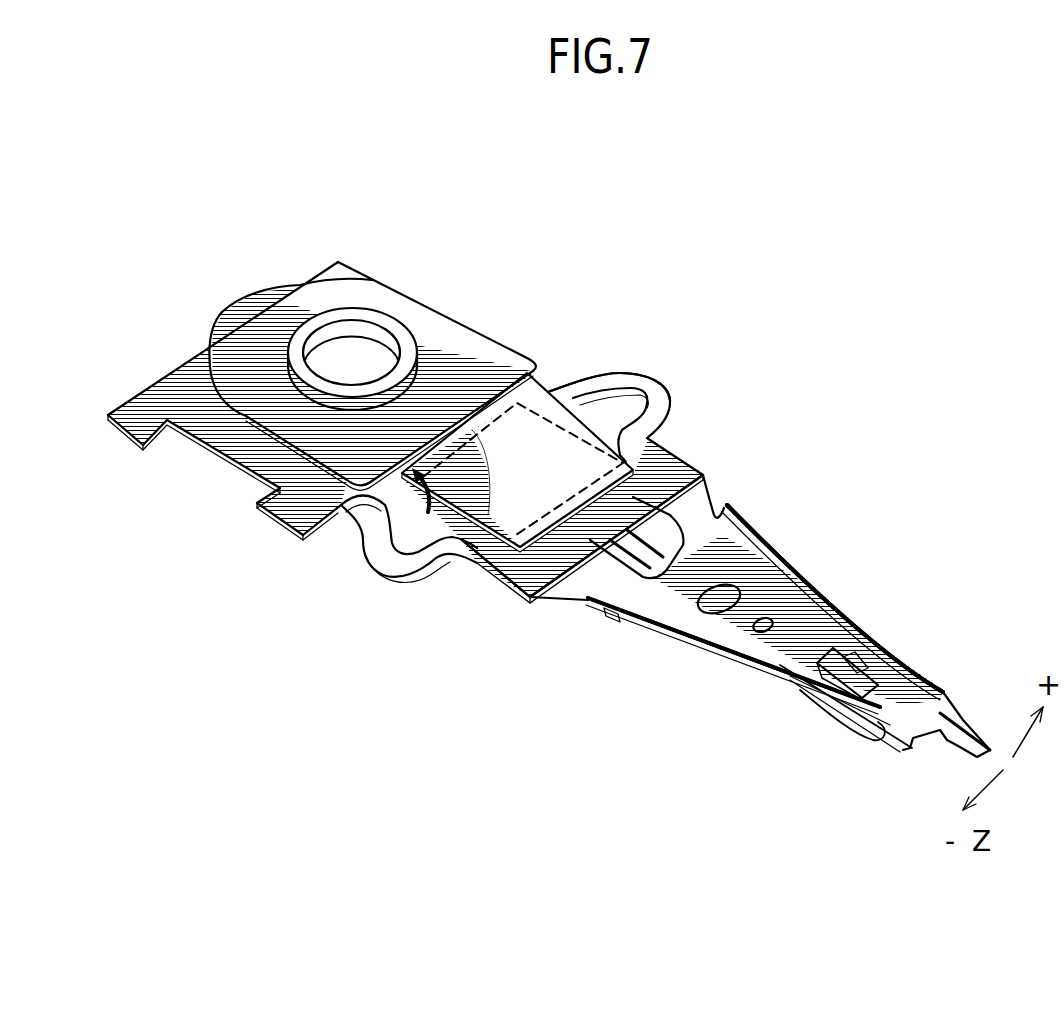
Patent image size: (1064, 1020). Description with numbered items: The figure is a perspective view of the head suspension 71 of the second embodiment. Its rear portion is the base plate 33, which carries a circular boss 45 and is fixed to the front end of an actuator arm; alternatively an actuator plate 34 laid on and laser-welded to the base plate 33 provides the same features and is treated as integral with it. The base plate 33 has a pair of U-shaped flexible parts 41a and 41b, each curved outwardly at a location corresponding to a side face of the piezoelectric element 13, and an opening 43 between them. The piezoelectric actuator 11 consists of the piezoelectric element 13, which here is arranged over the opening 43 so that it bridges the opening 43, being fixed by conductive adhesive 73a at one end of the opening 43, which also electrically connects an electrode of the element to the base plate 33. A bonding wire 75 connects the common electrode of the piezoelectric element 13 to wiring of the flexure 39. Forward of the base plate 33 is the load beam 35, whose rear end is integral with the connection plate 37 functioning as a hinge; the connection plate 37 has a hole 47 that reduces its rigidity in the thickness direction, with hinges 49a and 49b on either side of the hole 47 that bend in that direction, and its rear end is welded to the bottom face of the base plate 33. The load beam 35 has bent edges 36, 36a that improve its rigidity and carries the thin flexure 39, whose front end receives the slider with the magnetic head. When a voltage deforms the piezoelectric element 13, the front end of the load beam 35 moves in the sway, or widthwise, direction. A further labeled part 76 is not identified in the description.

The piezoelectric actuator 11 is at (598, 432).
The piezoelectric element 13 is at (537, 430).
The base plate 33 is at (440, 310).
The actuator plate 34 is at (340, 577).
The load beam 35 is at (800, 568).
The bent edge 36 is at (700, 648).
The bent edge 36a is at (832, 603).
The connection plate 37 is at (723, 505).
The flexure 39 is at (870, 737).
The flexible part 41a is at (617, 370).
The flexible part 41b is at (378, 570).
The opening 43 is at (467, 528).
The circular boss 45 is at (350, 337).
The hole 47 is at (617, 563).
The hinge 49a is at (712, 498).
The hinge 49b is at (557, 597).
The head suspension 71 is at (765, 255).
The conductive adhesive 73a is at (641, 472).
The bonding wire 75 is at (415, 488).
The hidden element outline 76 is at (506, 408).